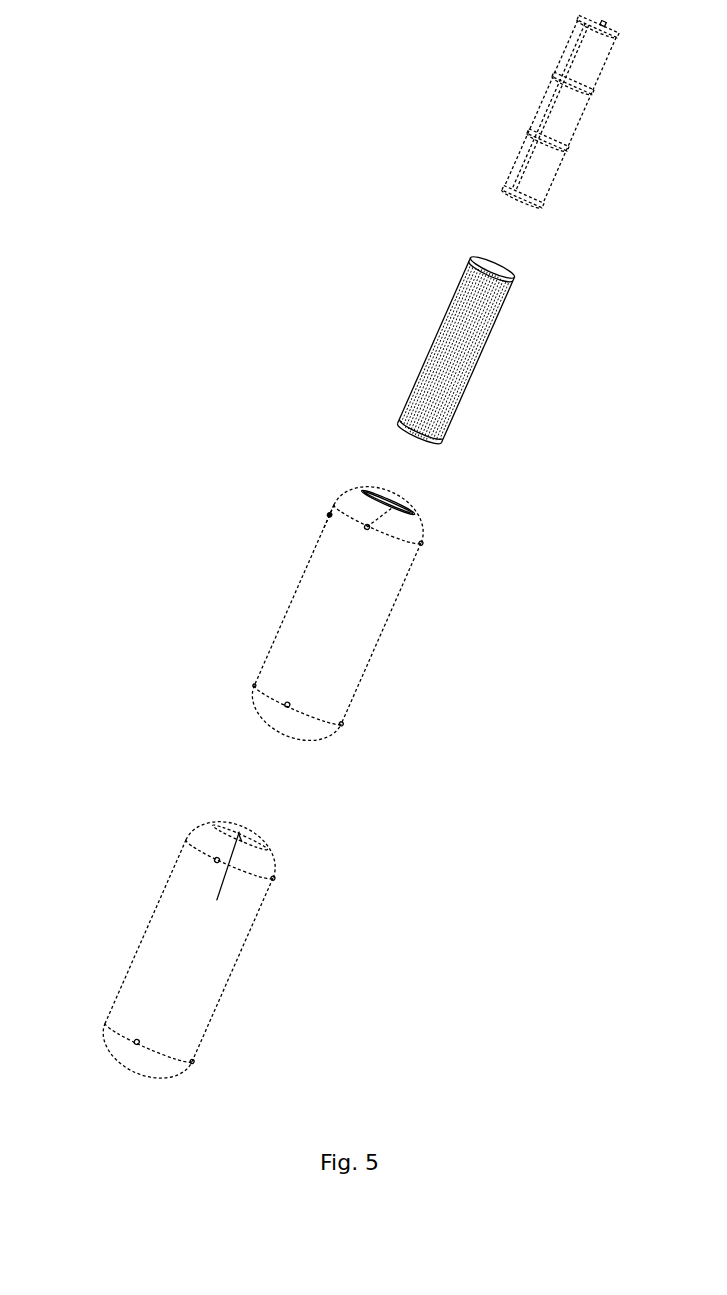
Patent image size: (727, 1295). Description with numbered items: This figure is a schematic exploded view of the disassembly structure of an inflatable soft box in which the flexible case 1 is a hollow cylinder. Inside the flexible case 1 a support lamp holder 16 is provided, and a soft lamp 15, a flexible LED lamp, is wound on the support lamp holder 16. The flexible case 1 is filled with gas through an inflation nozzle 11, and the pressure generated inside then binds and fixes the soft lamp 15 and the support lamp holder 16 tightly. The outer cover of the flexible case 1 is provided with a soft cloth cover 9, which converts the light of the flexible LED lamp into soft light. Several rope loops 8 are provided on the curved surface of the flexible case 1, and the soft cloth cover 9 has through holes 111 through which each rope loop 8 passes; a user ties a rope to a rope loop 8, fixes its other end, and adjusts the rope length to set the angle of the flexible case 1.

The flexible case 1 is at (303, 597).
The rope loop 8 is at (408, 506).
The soft cloth cover 9 is at (160, 925).
The inflation nozzle 11 is at (332, 514).
The soft lamp 15 is at (437, 337).
The support lamp holder 16 is at (547, 92).
The through hole 111 is at (217, 857).